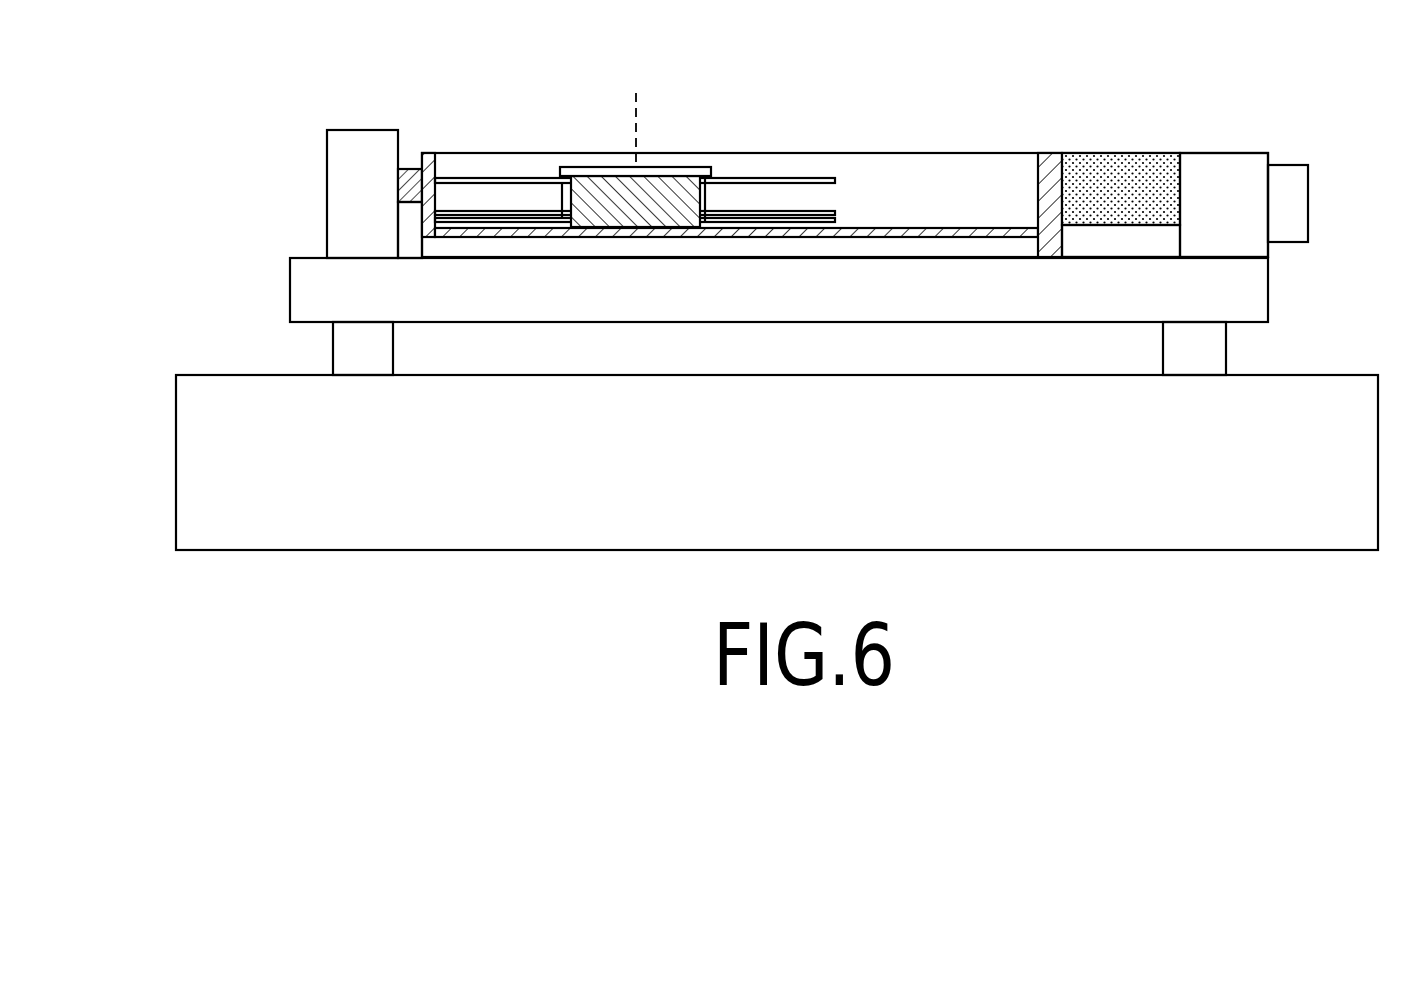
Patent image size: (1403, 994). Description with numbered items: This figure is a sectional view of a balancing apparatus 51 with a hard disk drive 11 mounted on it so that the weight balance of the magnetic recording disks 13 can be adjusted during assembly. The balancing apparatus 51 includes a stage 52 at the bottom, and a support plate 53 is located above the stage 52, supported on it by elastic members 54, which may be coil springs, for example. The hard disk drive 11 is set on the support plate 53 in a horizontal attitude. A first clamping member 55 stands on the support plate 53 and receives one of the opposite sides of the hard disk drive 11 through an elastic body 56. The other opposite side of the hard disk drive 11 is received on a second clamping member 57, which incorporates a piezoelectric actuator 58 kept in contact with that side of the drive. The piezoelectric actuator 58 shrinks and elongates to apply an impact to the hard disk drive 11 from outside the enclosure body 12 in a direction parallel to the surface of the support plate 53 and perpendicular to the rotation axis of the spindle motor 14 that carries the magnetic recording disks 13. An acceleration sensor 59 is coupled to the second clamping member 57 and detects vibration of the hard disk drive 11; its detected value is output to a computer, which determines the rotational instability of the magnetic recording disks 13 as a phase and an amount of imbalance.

The hard disk drive 11 is at (503, 153).
The enclosure body 12 is at (1050, 153).
The magnetic recording disks 13 is at (825, 177).
The spindle motor 14 is at (705, 165).
The balancing apparatus 51 is at (218, 341).
The stage 52 is at (176, 412).
The support plate 53 is at (290, 263).
The elastic members 54 is at (333, 357).
The first clamping member 55 is at (327, 145).
The elastic body 56 is at (413, 168).
The second clamping member 57 is at (1237, 153).
The piezoelectric actuator 58 is at (1148, 153).
The acceleration sensor 59 is at (1310, 177).